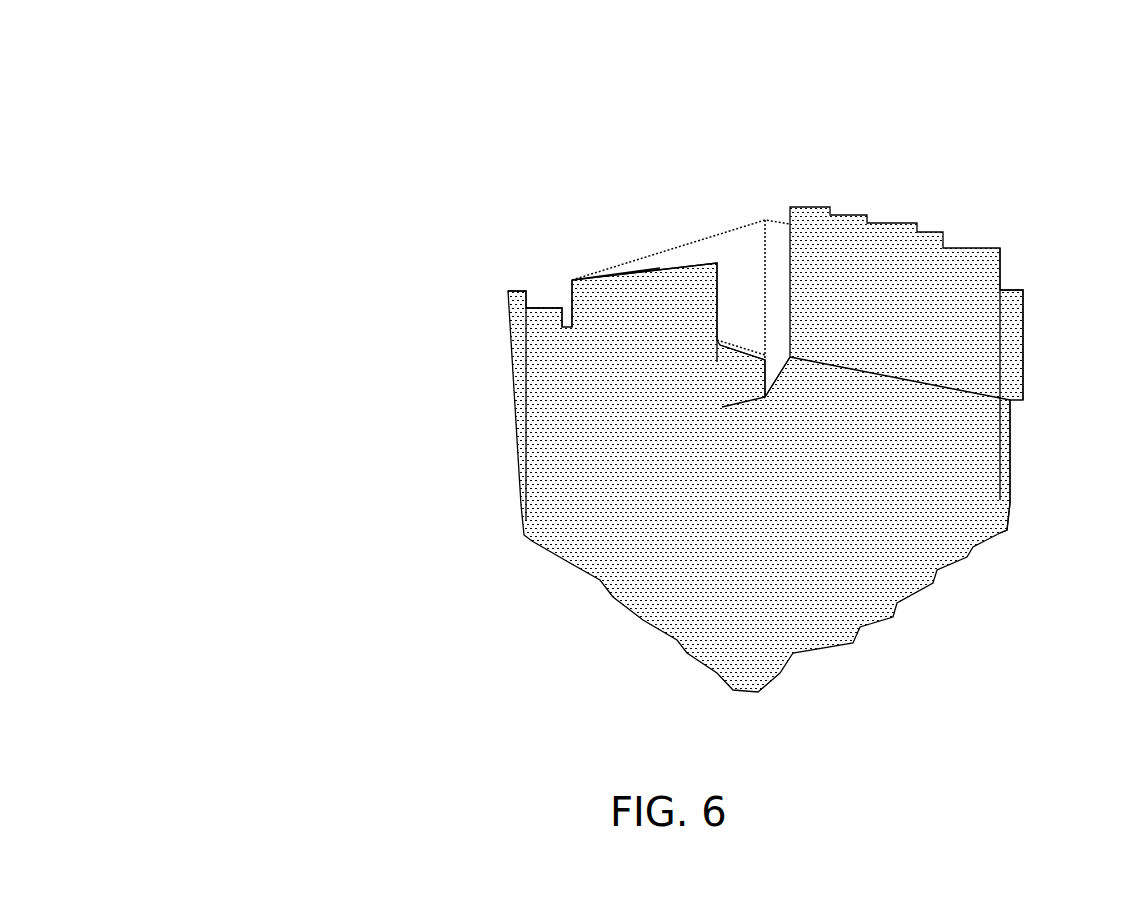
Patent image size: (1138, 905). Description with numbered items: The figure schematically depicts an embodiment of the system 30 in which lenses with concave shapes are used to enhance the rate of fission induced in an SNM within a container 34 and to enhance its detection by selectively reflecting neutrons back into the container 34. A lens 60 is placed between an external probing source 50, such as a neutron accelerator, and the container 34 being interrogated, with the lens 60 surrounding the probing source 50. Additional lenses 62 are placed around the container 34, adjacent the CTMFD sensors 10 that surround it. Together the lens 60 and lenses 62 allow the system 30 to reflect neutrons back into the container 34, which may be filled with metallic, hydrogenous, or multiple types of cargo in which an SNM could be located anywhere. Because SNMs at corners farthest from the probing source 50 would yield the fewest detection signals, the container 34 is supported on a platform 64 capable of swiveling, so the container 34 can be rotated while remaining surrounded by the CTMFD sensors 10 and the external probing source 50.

The CTMFD sensor 10 is at (891, 282).
The system 30 is at (270, 189).
The container 34 is at (759, 466).
The external probing source 50 is at (666, 322).
The lens 60 is at (620, 273).
The lenses 62 is at (560, 343).
The platform 64 is at (1032, 531).